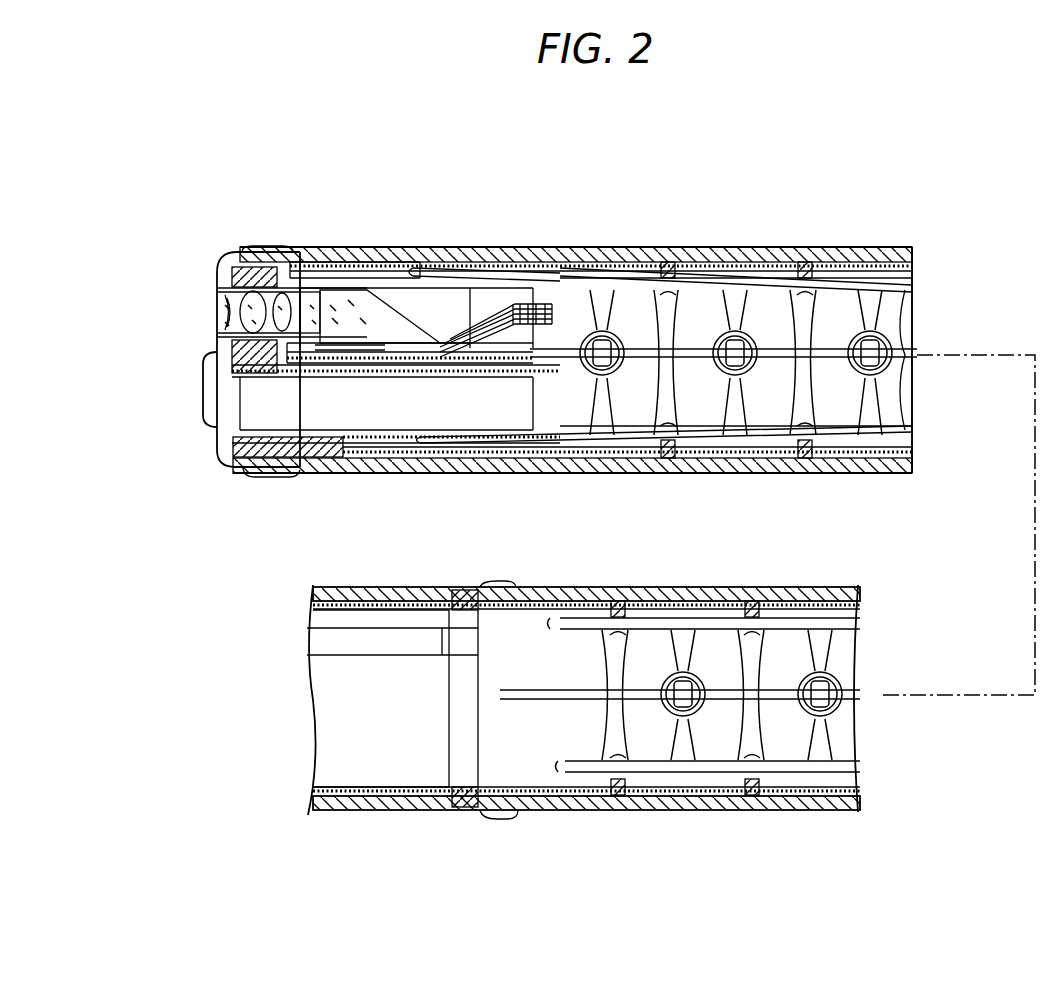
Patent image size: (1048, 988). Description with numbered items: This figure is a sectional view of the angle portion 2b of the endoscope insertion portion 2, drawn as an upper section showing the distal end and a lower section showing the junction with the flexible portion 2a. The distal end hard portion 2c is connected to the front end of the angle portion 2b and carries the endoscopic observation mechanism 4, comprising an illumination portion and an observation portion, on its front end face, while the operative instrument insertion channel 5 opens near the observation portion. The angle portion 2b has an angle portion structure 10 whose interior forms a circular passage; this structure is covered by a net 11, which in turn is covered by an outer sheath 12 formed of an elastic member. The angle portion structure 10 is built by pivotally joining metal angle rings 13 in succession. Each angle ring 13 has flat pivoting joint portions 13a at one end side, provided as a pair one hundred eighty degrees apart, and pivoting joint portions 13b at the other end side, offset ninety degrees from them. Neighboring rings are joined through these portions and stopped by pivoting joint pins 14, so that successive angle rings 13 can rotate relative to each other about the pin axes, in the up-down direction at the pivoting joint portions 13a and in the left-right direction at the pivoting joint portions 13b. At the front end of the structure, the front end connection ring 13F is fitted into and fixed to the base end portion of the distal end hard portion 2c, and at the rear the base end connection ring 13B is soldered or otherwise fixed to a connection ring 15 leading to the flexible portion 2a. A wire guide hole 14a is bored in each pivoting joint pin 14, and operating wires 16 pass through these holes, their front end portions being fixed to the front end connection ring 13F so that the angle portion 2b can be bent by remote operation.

The insertion portion 2 is at (524, 197).
The flexible portion 2a is at (346, 587).
The angle portion 2b is at (886, 242).
The distal end hard portion 2c is at (322, 246).
The endoscopic observation mechanism 4 is at (214, 303).
The operative instrument insertion channel 5 is at (226, 464).
The angle portion structure 10 is at (578, 254).
The net 11 is at (490, 253).
The outer sheath 12 is at (540, 256).
The angle ring 13 is at (783, 262).
The pivoting joint portion 13a is at (890, 367).
The pivoting joint portion 13b is at (676, 262).
The front end connection ring 13F is at (356, 264).
The base end connection ring 13B is at (502, 818).
The pivoting joint pin 14 is at (808, 297).
The wire guide hole 14a is at (812, 284).
The connection ring 15 is at (463, 808).
The operating wire 16 is at (458, 270).